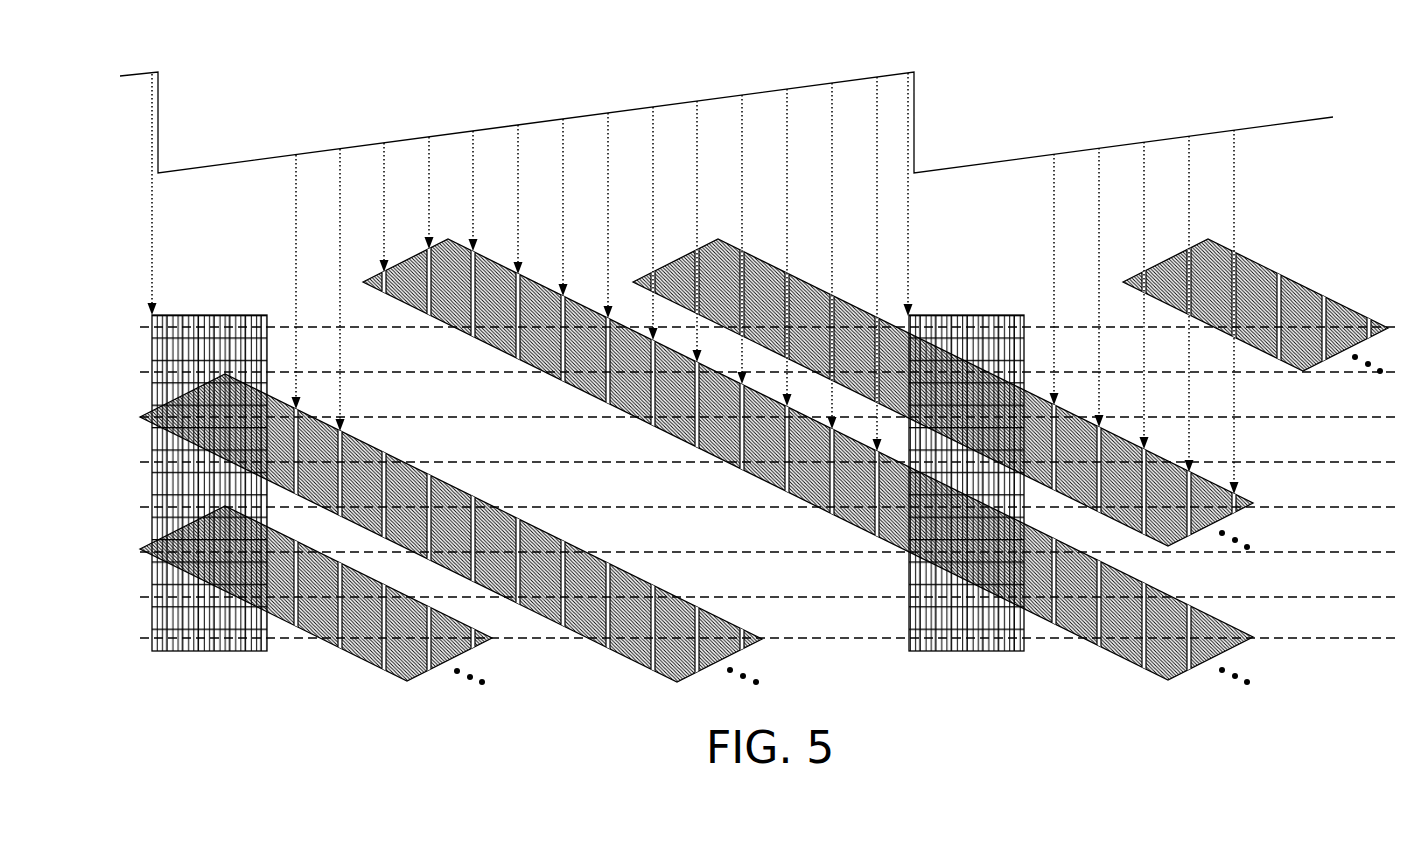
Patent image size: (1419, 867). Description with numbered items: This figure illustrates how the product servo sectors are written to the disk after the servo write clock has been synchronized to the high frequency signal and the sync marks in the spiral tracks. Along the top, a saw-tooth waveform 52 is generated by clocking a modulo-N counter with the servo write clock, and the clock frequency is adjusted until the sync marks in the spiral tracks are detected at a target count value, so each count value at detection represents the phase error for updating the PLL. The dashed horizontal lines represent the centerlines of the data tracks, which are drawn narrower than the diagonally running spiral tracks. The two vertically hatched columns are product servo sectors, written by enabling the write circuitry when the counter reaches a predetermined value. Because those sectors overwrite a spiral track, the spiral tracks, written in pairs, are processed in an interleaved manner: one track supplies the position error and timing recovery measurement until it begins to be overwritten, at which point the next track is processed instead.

The saw-tooth waveform 52 is at (582, 116).